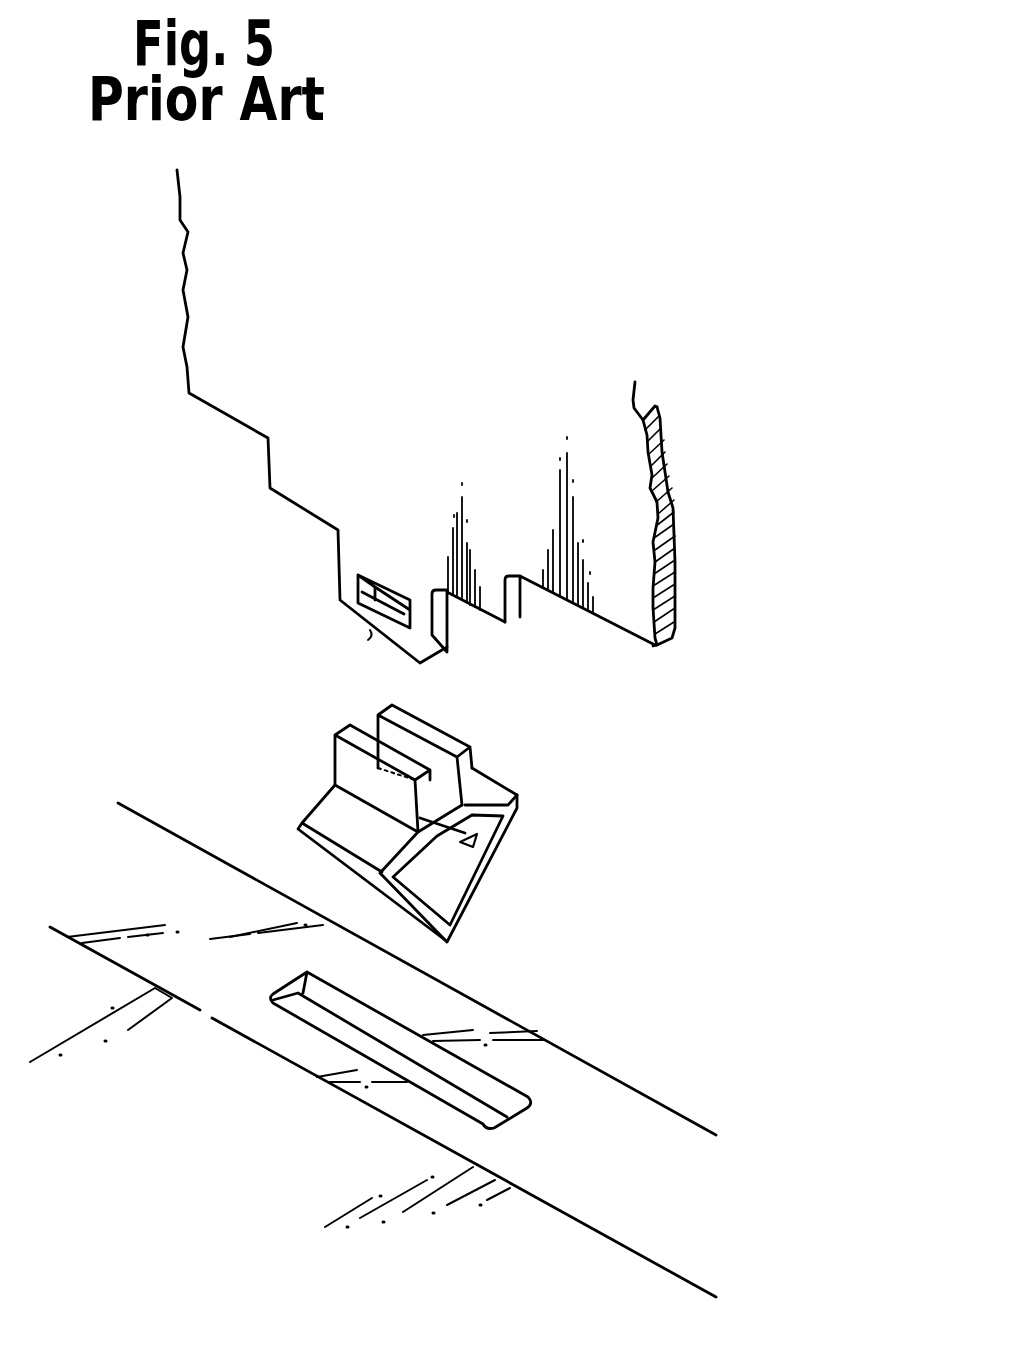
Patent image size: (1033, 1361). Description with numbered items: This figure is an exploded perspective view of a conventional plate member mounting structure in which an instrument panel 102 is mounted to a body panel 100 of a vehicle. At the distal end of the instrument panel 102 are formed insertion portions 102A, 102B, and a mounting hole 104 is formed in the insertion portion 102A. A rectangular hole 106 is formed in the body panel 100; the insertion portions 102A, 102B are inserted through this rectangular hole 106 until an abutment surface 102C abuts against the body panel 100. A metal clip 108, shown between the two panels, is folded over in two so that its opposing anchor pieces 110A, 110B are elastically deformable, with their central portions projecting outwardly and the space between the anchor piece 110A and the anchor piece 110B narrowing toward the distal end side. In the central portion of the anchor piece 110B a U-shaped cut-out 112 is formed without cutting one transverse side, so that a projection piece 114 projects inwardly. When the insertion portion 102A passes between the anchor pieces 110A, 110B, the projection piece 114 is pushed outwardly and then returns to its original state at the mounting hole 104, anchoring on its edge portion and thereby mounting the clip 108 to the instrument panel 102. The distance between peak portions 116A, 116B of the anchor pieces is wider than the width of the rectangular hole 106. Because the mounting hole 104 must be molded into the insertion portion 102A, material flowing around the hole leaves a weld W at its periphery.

The body panel 100 is at (577, 1081).
The instrument panel 102 is at (676, 481).
The insertion portion 102A is at (445, 648).
The insertion portion 102B is at (518, 600).
The abutment surface 102C is at (638, 648).
The mounting hole 104 is at (353, 619).
The rectangular hole 106 is at (387, 1027).
The metal clip 108 is at (576, 843).
The anchor piece 110A is at (337, 858).
The anchor piece 110B is at (480, 896).
The U-shaped cut-out 112 is at (468, 846).
The projection piece 114 is at (448, 795).
The peak portion 116A is at (302, 822).
The peak portion 116B is at (518, 798).
The weld W is at (372, 634).